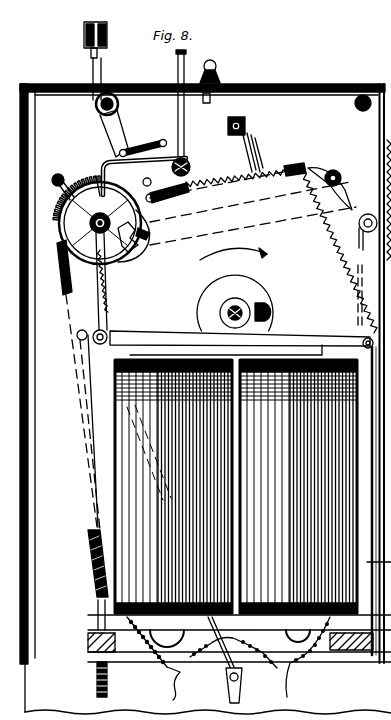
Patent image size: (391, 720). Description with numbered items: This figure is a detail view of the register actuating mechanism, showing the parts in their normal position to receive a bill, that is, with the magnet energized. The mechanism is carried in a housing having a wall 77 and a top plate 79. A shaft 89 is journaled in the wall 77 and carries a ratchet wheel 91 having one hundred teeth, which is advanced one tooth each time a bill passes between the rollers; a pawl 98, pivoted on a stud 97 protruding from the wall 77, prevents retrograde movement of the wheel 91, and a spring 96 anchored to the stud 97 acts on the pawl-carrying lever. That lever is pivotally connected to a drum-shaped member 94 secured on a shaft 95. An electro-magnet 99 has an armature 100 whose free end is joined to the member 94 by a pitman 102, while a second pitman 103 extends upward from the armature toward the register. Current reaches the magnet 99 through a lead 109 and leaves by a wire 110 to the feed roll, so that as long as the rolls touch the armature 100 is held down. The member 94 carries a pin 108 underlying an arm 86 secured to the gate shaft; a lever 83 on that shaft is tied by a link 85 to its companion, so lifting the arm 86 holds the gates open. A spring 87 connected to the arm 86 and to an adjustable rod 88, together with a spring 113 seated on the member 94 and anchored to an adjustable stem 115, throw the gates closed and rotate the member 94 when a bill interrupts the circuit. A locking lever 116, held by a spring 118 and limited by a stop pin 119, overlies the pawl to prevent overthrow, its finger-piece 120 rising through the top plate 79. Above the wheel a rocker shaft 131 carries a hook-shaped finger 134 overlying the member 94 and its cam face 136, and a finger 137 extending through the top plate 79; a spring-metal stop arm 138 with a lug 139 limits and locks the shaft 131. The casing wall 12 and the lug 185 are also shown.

The casing wall 12 is at (384, 72).
The wall 77 is at (75, 455).
The top plate 79 is at (298, 85).
The lever 83 is at (60, 272).
The link 85 is at (252, 220).
The arm or lever 86 is at (79, 178).
The spring 87 is at (80, 411).
The adjustable rod 88 is at (241, 694).
The shaft 89 is at (245, 306).
The ratchet wheel 91 is at (281, 251).
The drum-shaped member 94 is at (136, 257).
The shaft 95 is at (125, 230).
The spring 96 is at (296, 164).
The stud 97 is at (336, 168).
The pawl 98 is at (347, 194).
The electro-magnet 99 is at (236, 486).
The armature 100 is at (293, 335).
The pitman or link 102 is at (108, 285).
The second pitman 103 is at (93, 66).
The pin 108 is at (99, 214).
The lead 109 is at (84, 42).
The wire 110 is at (228, 658).
The spring 113 is at (60, 250).
The adjustable stem 115 is at (100, 608).
The locking or overthrow-preventing lever 116 is at (122, 128).
The spring 118 is at (150, 145).
The stop pin 119 is at (166, 189).
The finger-piece 120 is at (103, 66).
The rocker shaft 131 is at (191, 166).
The hook-shaped finger 134 is at (174, 153).
The cam face 136 is at (380, 160).
The finger 137 is at (177, 66).
The stop arm 138 is at (214, 84).
The lug 139 is at (211, 99).
The lug 185 is at (148, 236).